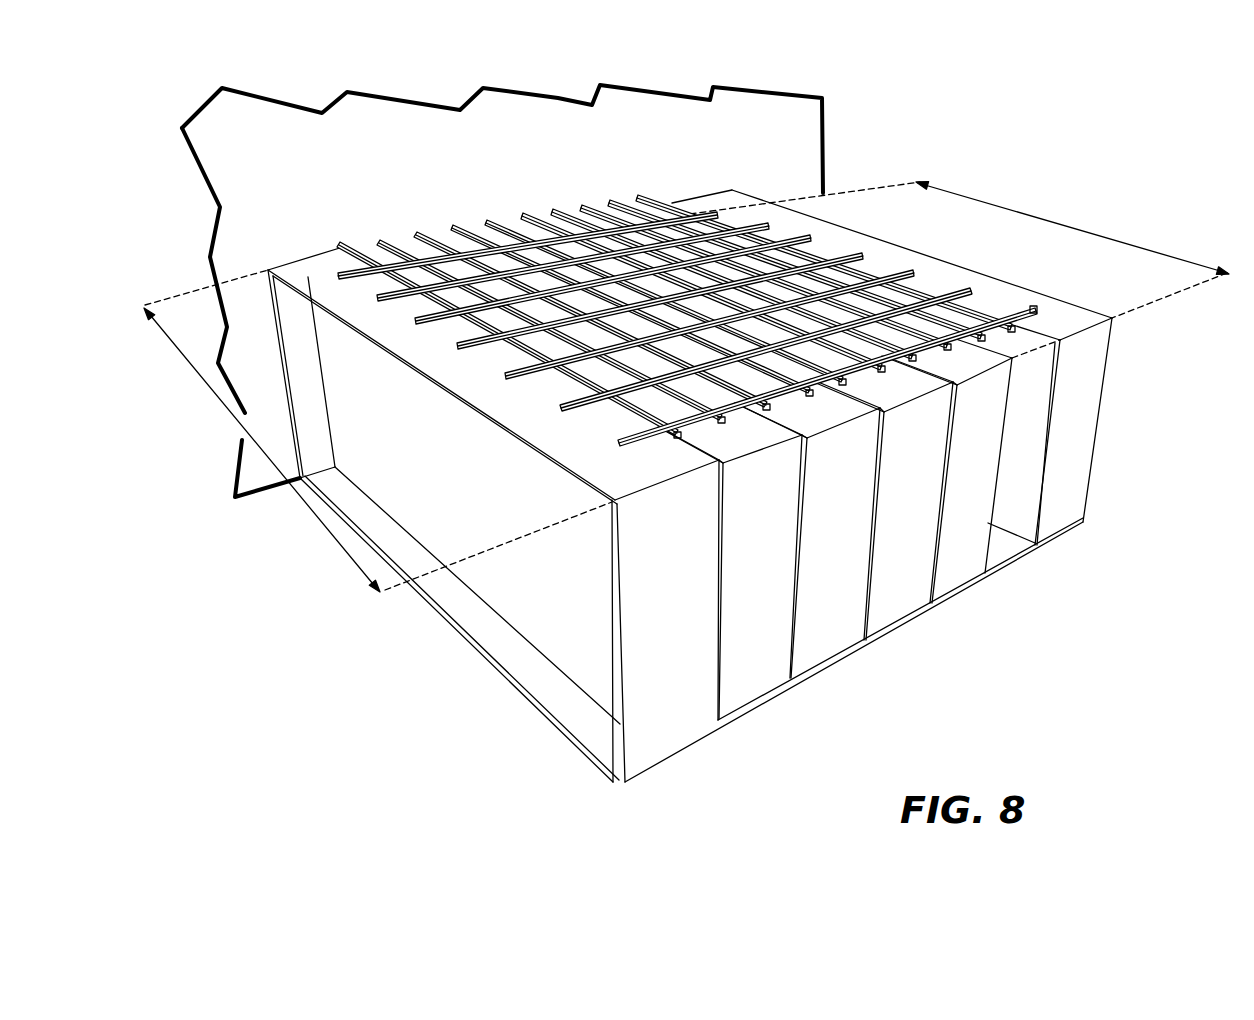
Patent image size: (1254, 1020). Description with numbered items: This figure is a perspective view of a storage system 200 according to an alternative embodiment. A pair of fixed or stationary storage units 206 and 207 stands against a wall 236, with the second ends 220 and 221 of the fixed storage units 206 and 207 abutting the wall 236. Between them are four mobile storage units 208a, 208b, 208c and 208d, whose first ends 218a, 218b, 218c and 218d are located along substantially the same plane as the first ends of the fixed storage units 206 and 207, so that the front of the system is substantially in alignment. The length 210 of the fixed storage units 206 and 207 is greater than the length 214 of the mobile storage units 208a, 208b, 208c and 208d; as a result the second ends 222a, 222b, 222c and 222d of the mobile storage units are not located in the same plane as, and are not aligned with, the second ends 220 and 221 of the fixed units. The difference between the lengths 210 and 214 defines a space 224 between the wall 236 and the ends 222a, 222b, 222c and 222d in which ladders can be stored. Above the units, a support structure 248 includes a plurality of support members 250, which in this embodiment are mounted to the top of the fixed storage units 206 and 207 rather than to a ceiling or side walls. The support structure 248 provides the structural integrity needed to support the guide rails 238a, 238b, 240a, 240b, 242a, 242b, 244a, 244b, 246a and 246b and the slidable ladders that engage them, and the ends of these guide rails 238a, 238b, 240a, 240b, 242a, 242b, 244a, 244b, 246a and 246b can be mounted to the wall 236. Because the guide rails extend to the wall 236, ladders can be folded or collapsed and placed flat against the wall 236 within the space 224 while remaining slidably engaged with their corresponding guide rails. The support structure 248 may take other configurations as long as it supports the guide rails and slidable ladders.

The assembly 200 is at (686, 443).
The fixed storage unit 206 is at (691, 506).
The fixed storage unit 207 is at (664, 747).
The mobile storage unit 208a is at (945, 570).
The mobile storage unit 208b is at (880, 610).
The mobile storage unit 208c is at (807, 655).
The mobile storage unit 208d is at (726, 693).
The length of fixed storage units 210 is at (378, 431).
The length of mobile storage units 214 is at (959, 250).
The first end of mobile storage unit 218a is at (969, 569).
The first end of mobile storage unit 218b is at (901, 606).
The first end of mobile storage unit 218c is at (829, 647).
The first end of mobile storage unit 218d is at (755, 692).
The second end of fixed storage unit 220 is at (702, 204).
The second end of fixed storage unit 221 is at (305, 258).
The second end of mobile storage unit 222a is at (717, 269).
The second end of mobile storage unit 222b is at (657, 261).
The second end of mobile storage unit 222c is at (600, 280).
The second end of mobile storage unit 222d is at (515, 303).
The space 224 is at (703, 277).
The wall 236 is at (788, 132).
The guide rail 238a is at (645, 195).
The guide rail 238b is at (612, 200).
The guide rail 240a is at (584, 205).
The guide rail 240b is at (555, 209).
The guide rail 242a is at (524, 213).
The guide rail 242b is at (489, 220).
The guide rail 244a is at (454, 225).
The guide rail 244b is at (418, 232).
The guide rail 246a is at (381, 240).
The guide rail 246b is at (341, 243).
The support structure 248 is at (1050, 313).
The support member 250 is at (713, 210).